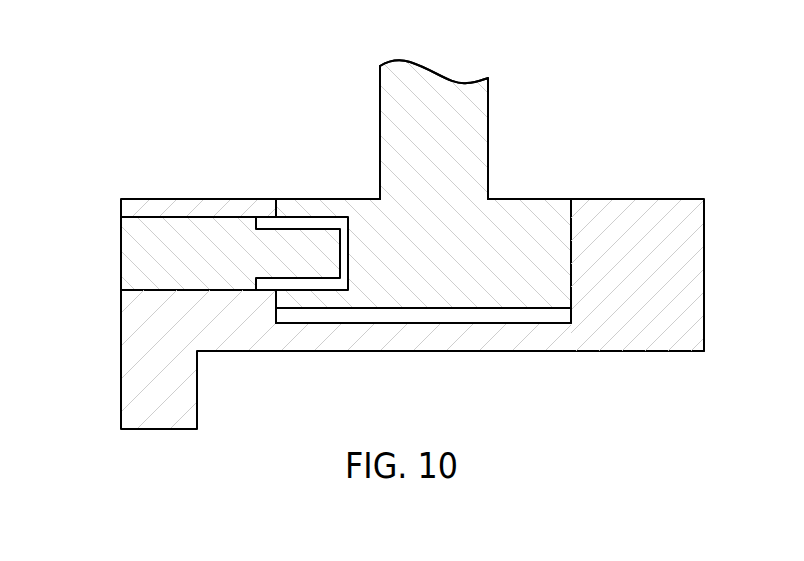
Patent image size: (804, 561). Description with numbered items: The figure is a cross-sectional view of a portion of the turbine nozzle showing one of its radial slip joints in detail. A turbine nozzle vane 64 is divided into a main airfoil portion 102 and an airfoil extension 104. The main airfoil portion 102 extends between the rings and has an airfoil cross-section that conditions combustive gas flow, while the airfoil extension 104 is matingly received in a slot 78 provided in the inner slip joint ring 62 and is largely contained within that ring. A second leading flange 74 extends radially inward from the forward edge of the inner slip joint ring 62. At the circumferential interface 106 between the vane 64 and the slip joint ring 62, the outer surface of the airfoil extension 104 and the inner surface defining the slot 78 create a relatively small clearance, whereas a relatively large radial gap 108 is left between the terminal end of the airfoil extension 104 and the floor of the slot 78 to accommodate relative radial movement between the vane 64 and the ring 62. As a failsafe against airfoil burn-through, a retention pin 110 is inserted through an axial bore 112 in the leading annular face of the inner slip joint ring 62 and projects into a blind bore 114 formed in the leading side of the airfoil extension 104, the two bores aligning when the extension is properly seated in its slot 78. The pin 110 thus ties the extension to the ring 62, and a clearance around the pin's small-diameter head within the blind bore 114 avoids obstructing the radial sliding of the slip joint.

The inner slip joint ring 62 is at (642, 203).
The turbine nozzle vane 64 is at (385, 88).
The second leading flange 74 is at (128, 388).
The slot 78 is at (543, 320).
The main airfoil portion 102 is at (380, 138).
The airfoil extension 104 is at (467, 259).
The circumferential interface 106 is at (313, 205).
The radial gap 108 is at (413, 315).
The retention pin 110 is at (128, 255).
The axial bore 112 is at (175, 213).
The blind bore 114 is at (297, 285).